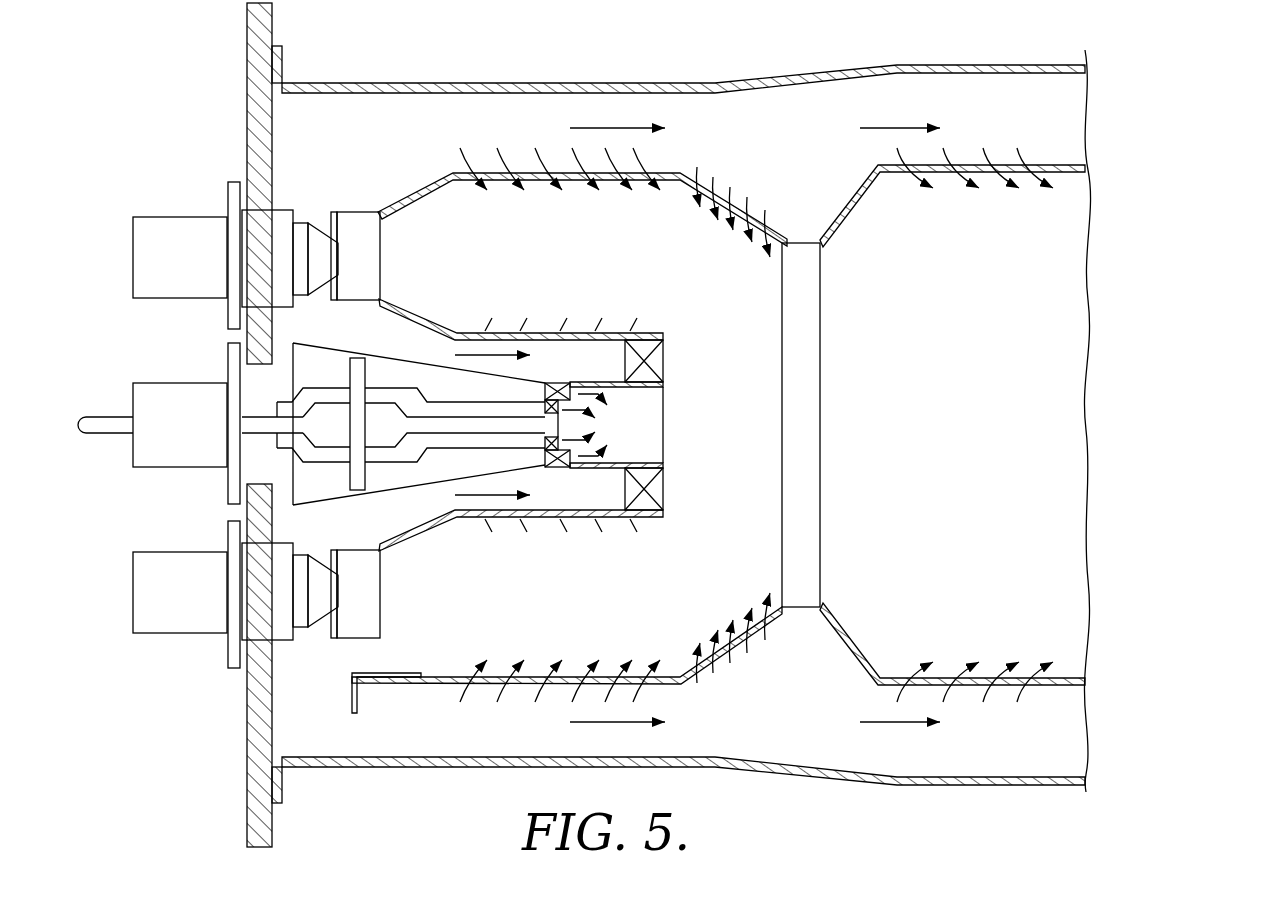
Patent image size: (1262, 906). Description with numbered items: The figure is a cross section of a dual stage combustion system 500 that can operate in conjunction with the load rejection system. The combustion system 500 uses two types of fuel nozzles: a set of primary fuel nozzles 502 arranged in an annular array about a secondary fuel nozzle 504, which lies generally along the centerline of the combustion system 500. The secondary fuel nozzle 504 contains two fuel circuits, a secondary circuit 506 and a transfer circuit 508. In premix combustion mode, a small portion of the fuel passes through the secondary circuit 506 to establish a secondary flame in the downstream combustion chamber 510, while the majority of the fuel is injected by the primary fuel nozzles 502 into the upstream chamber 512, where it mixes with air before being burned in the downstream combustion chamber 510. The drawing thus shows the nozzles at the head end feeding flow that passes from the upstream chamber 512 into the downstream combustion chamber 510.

The dual stage combustion system 500 is at (1199, 130).
The primary fuel nozzles 502 is at (333, 250).
The secondary fuel nozzle 504 is at (397, 392).
The secondary circuit 506 is at (355, 473).
The transfer circuit 508 is at (535, 437).
The downstream combustion chamber 510 is at (973, 369).
The upstream chamber 512 is at (571, 251).